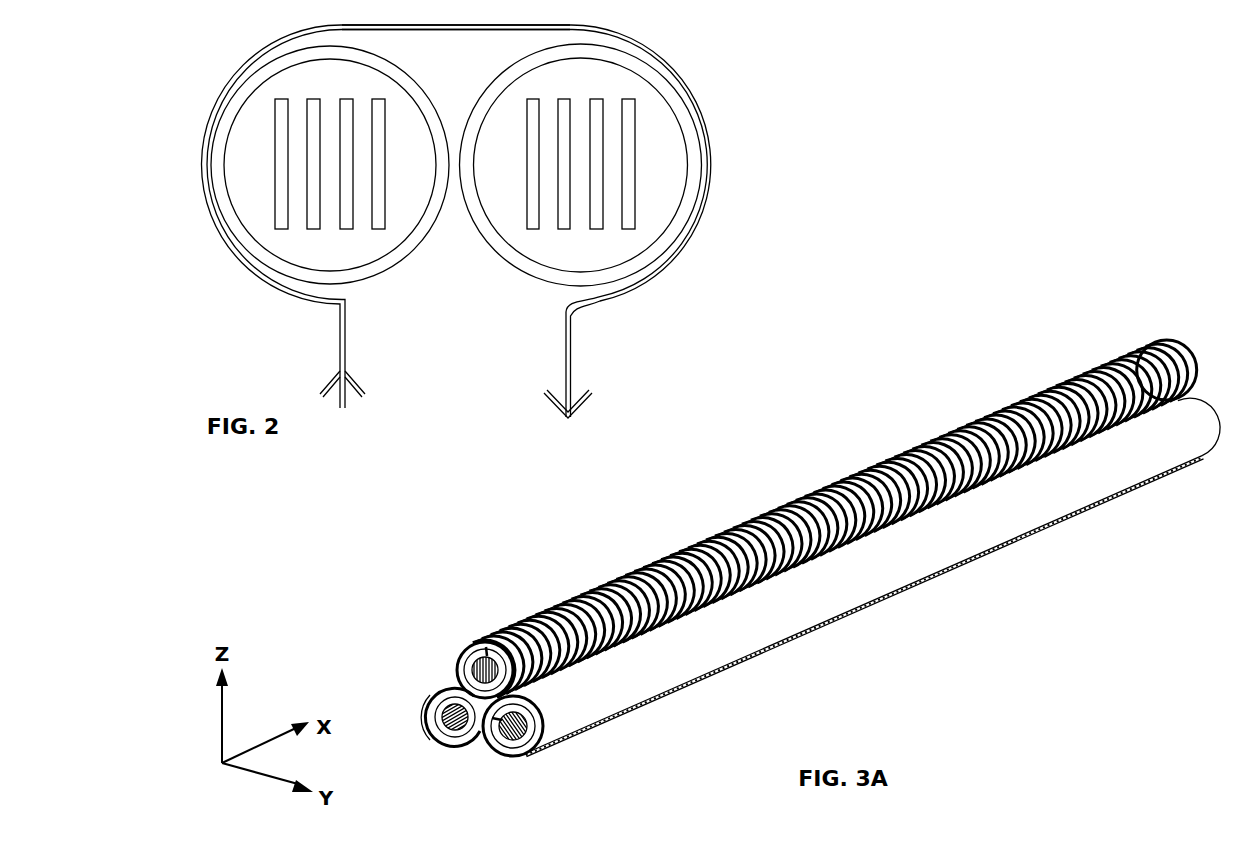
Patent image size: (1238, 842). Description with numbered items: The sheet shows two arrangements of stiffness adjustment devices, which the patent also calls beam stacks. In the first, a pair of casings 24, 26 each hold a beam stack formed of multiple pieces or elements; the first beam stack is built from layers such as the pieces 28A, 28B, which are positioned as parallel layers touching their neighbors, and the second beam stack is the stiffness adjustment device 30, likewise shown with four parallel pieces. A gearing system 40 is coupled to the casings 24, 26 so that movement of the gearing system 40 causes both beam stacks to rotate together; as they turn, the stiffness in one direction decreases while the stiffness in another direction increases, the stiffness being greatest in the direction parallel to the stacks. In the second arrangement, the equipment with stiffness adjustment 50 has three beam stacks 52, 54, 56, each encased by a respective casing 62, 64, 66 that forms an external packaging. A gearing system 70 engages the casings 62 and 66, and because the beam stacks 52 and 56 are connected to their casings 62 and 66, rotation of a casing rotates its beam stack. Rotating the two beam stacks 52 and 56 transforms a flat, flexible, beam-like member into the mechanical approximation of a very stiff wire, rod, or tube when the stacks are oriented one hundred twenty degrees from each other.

In FIG. 2, the casing 24 is at (260, 255).
In FIG. 2, the casing 26 is at (662, 245).
In FIG. 2, the piece of beam stack 28A is at (282, 173).
In FIG. 2, the piece of beam stack 28B is at (313, 98).
In FIG. 2, the stiffness adjustment device 30 is at (637, 143).
In FIG. 2, the gearing system 40 is at (570, 355).
In FIG. 3A, the equipment with stiffness adjustment 50 is at (699, 516).
In FIG. 3A, the stiffness adjustment device 52 is at (458, 733).
In FIG. 3A, the stiffness adjustment device 54 is at (473, 668).
In FIG. 3A, the stiffness adjustment device 56 is at (503, 750).
In FIG. 3A, the casing 62 is at (445, 693).
In FIG. 3A, the casing 64 is at (520, 653).
In FIG. 3A, the casing 66 is at (533, 757).
In FIG. 3A, the gearing system 70 is at (677, 674).